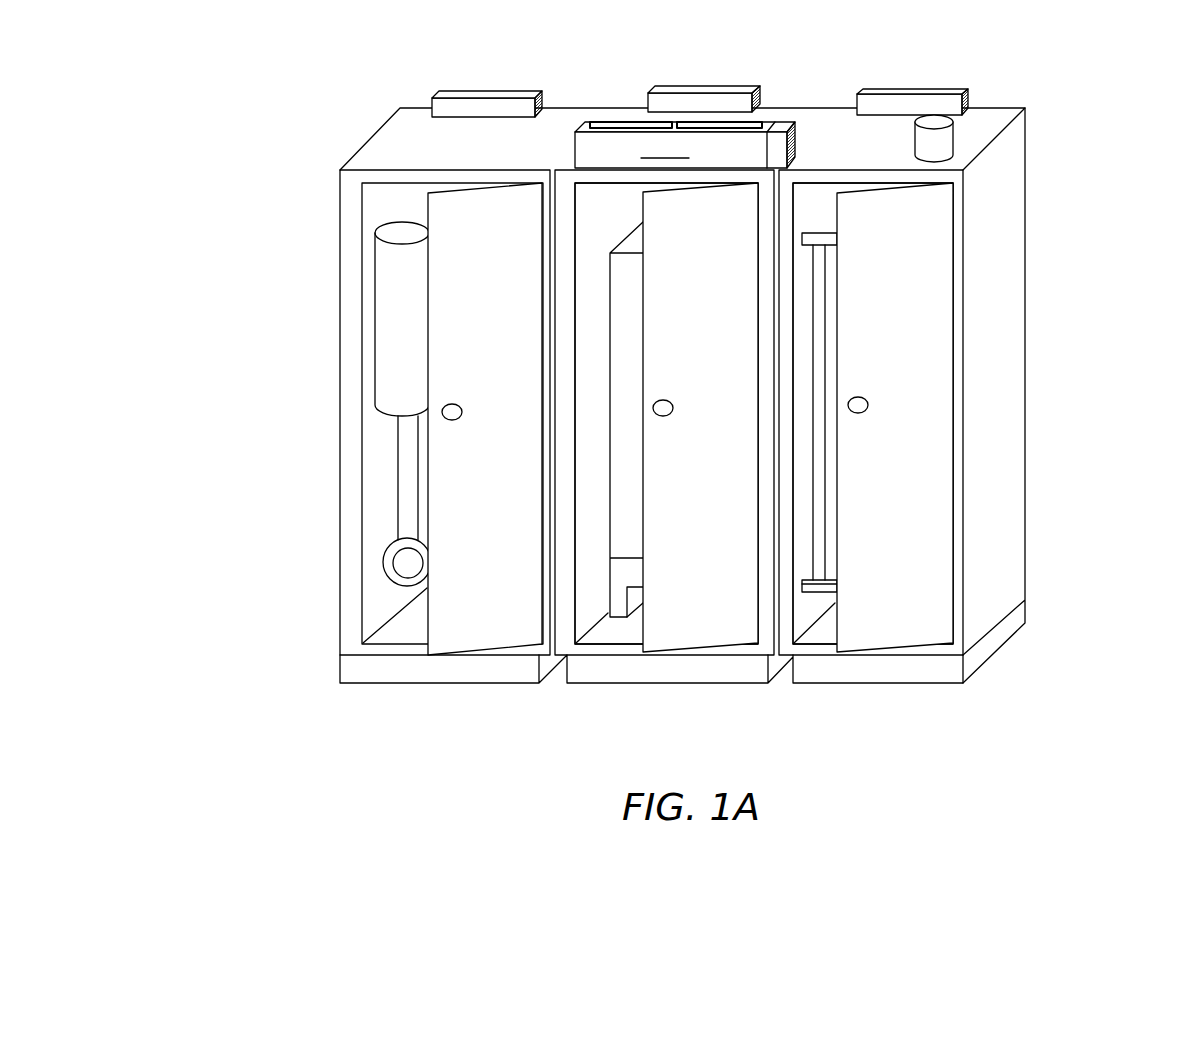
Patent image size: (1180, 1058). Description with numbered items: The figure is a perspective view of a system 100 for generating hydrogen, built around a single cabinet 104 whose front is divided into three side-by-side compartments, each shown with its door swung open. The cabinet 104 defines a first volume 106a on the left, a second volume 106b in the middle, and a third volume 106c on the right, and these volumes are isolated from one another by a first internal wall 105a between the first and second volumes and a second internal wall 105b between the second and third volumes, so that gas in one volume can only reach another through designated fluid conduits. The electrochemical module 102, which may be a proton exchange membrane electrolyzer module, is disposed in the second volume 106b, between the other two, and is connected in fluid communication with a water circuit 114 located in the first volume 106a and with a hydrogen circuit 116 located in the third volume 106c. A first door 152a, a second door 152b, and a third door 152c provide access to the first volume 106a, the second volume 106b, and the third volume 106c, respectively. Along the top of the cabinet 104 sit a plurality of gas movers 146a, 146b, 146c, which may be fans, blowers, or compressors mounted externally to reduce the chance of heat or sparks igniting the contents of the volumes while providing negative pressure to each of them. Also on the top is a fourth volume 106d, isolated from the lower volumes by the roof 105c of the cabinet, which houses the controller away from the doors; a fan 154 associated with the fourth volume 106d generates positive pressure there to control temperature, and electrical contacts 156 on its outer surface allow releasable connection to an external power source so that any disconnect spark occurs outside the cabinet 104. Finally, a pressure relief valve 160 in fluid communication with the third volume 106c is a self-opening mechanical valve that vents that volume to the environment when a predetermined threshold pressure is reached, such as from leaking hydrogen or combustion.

The system 100 is at (255, 98).
The electrochemical module 102 is at (622, 530).
The cabinet 104 is at (1012, 355).
The first internal wall 105a is at (587, 502).
The second internal wall 105b is at (803, 608).
The roof 105c is at (393, 148).
The first volume 106a is at (382, 196).
The second volume 106b is at (596, 203).
The third volume 106c is at (827, 215).
The fourth volume 106d is at (685, 145).
The water circuit 114 is at (393, 389).
The hydrogen circuit 116 is at (822, 495).
The gas mover 146a is at (458, 92).
The gas mover 146b is at (700, 92).
The gas mover 146c is at (925, 92).
The first door 152a is at (440, 635).
The second door 152b is at (663, 618).
The third door 152c is at (912, 608).
The fan 154 is at (780, 123).
The electrical contacts 156 is at (617, 120).
The pressure relief valve 160 is at (947, 140).